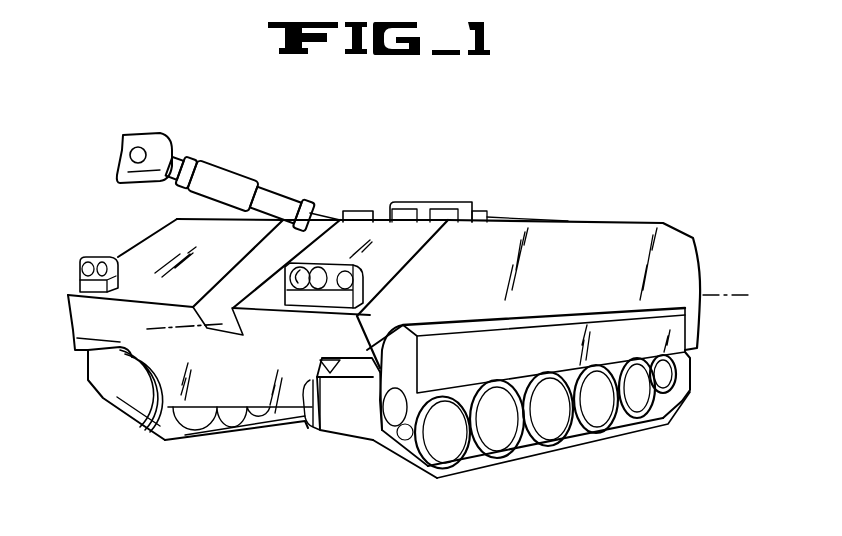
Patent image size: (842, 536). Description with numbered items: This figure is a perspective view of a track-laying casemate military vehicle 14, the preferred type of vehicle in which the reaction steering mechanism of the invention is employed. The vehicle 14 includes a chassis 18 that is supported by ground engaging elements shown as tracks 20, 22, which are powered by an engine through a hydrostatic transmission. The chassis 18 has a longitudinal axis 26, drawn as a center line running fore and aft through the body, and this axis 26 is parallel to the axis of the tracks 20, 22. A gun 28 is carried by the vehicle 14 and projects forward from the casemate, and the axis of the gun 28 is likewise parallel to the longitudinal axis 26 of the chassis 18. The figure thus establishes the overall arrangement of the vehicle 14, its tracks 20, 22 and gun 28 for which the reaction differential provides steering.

The track-laying casemate military vehicle 14 is at (519, 177).
The chassis 18 is at (672, 224).
The track 20 is at (103, 392).
The track 22 is at (362, 452).
The longitudinal axis 26 is at (159, 328).
The gun 28 is at (273, 190).